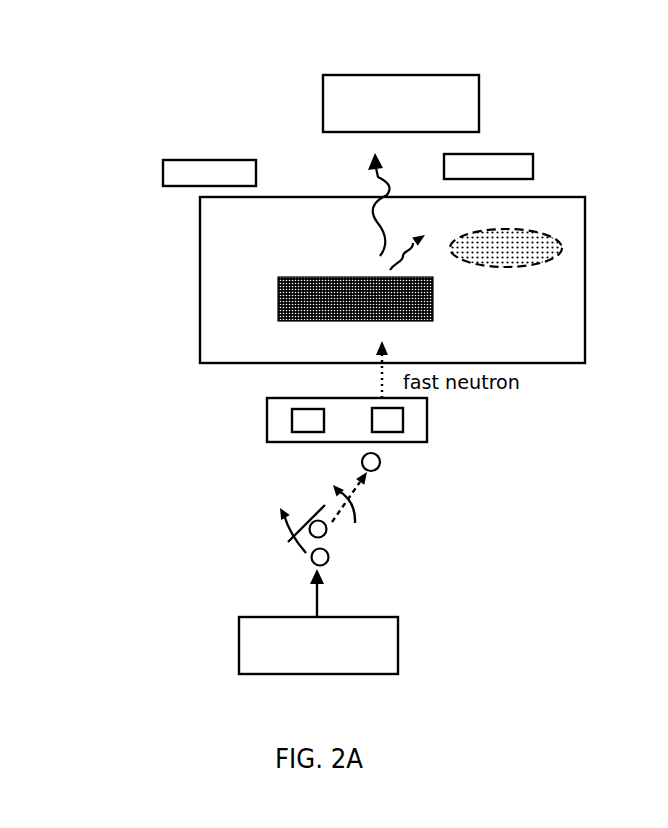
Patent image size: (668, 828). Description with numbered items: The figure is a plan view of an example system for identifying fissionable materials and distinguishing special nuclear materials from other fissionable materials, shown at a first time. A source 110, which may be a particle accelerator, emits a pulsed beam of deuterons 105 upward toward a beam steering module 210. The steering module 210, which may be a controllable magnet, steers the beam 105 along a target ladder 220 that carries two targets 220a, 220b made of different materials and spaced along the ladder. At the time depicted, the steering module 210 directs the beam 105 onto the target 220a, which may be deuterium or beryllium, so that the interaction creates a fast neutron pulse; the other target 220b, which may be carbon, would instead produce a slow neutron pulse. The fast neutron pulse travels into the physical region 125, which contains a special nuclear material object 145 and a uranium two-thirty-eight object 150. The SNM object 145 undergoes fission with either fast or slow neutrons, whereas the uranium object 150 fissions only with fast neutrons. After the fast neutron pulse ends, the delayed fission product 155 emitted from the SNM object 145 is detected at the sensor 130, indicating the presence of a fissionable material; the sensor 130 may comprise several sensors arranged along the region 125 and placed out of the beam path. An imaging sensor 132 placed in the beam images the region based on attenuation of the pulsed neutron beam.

The pulsed beam of deuterons 105 is at (332, 593).
The source 110 is at (318, 645).
The physical region 125 is at (547, 172).
The sensor 130 is at (348, 170).
The imaging sensor 132 is at (401, 103).
The special nuclear material (SNM) object 145 is at (338, 212).
The uranium 238 (U-238) object 150 is at (462, 245).
The delayed fission product 155 is at (366, 204).
The beam steering module 210 is at (303, 509).
The target ladder 220 is at (334, 432).
The target 220a is at (306, 421).
The target 220b is at (389, 417).